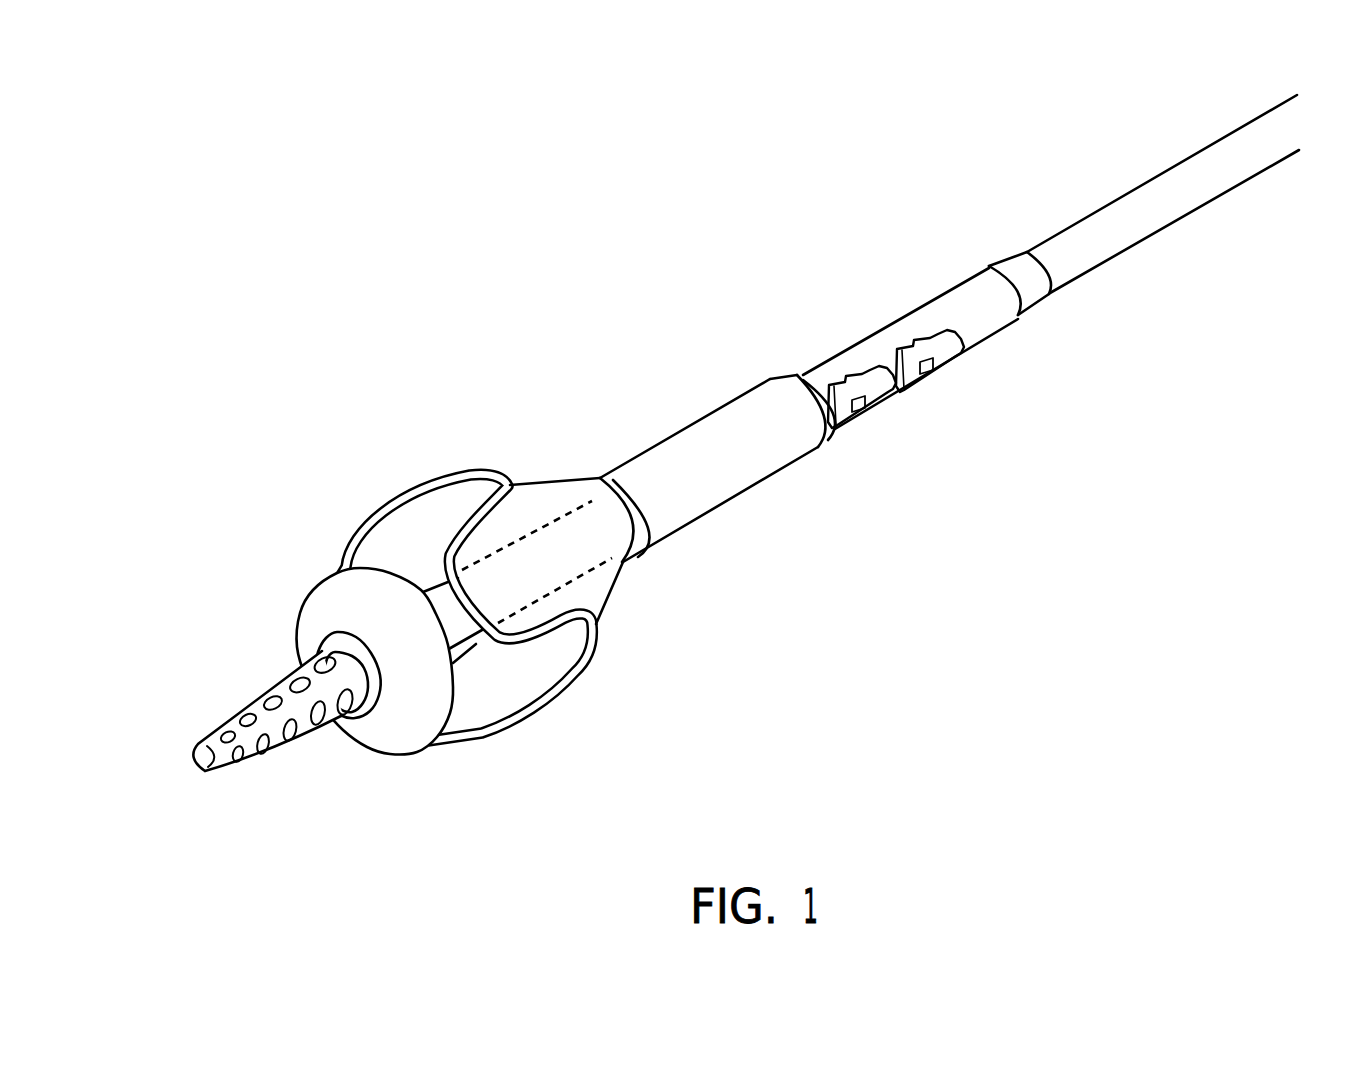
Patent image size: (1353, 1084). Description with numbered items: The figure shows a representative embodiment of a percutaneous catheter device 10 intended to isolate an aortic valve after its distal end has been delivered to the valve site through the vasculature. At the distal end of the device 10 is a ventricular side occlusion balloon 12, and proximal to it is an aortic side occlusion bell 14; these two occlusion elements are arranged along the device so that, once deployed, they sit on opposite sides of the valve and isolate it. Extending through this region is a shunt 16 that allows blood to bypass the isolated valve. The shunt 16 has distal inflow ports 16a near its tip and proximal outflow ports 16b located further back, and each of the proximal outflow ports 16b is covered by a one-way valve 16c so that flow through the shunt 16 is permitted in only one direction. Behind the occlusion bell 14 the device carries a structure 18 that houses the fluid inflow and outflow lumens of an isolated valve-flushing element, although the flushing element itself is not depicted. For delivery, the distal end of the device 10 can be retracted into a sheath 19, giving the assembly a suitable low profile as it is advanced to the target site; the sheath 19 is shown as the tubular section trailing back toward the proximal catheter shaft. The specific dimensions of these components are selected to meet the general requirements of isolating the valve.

The percutaneous catheter device 10 is at (720, 489).
The ventricular side occlusion balloon 12 is at (423, 703).
The aortic side occlusion bell 14 is at (593, 655).
The shunt 16 is at (248, 724).
The distal inflow ports 16a is at (247, 707).
The proximal outflow ports 16b is at (955, 343).
The one-way valves 16c is at (880, 387).
The structure 18 is at (815, 390).
The sheath 19 is at (682, 457).